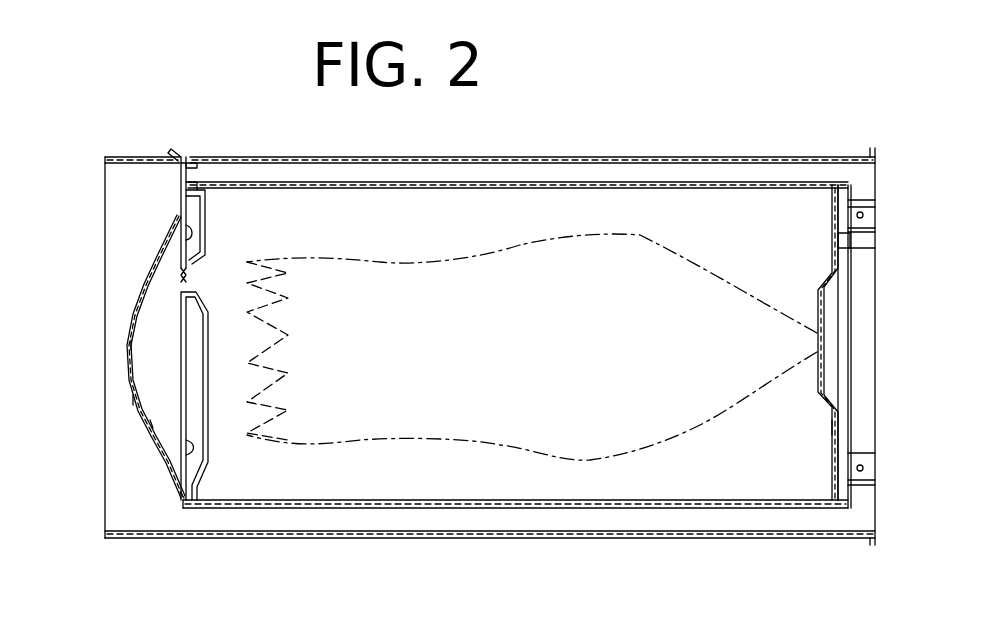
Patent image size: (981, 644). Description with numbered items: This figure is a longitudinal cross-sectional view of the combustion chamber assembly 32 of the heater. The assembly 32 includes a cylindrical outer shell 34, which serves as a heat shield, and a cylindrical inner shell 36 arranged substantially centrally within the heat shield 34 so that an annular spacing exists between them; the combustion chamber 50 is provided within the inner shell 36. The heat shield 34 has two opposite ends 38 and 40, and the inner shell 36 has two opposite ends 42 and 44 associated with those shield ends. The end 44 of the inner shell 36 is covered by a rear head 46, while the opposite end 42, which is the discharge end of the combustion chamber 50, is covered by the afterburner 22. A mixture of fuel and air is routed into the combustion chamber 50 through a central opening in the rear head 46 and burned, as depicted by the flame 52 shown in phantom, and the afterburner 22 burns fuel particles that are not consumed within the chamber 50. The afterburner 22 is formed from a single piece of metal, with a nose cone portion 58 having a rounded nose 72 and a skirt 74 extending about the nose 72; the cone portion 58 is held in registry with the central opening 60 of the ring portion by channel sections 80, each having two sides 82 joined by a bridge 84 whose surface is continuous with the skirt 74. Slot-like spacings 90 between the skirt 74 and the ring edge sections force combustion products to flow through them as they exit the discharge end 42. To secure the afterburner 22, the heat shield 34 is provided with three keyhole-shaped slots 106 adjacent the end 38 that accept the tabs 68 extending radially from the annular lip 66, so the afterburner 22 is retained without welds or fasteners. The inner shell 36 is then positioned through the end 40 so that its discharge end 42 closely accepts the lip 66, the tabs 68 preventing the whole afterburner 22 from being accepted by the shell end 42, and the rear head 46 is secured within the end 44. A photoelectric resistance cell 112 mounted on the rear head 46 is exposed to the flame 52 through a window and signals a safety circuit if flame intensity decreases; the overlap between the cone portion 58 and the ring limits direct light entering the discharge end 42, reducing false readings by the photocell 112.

The afterburner 22 is at (142, 300).
The combustion chamber assembly 32 is at (442, 157).
The cylindrical outer shell 34 is at (600, 157).
The cylindrical inner shell 36 is at (672, 182).
The heat shield end 38 is at (114, 156).
The heat shield end 40 is at (857, 150).
The inner shell end 42 is at (207, 186).
The inner shell end 44 is at (829, 182).
The rear head 46 is at (834, 427).
The combustion chamber 50 is at (603, 494).
The flame 52 is at (690, 430).
The nose cone portion 58 is at (153, 421).
The central opening 60 is at (205, 242).
The annular lip 66 is at (183, 504).
The tabs 68 is at (173, 154).
The rounded nose 72 is at (130, 348).
The skirt 74 is at (138, 400).
The channel sections 80 is at (195, 276).
The sides 82 is at (203, 296).
The bridge 84 is at (180, 494).
The slot-like spacing 90 is at (188, 237).
The slots 106 is at (191, 162).
The photoelectric resistance cell 112 is at (852, 238).